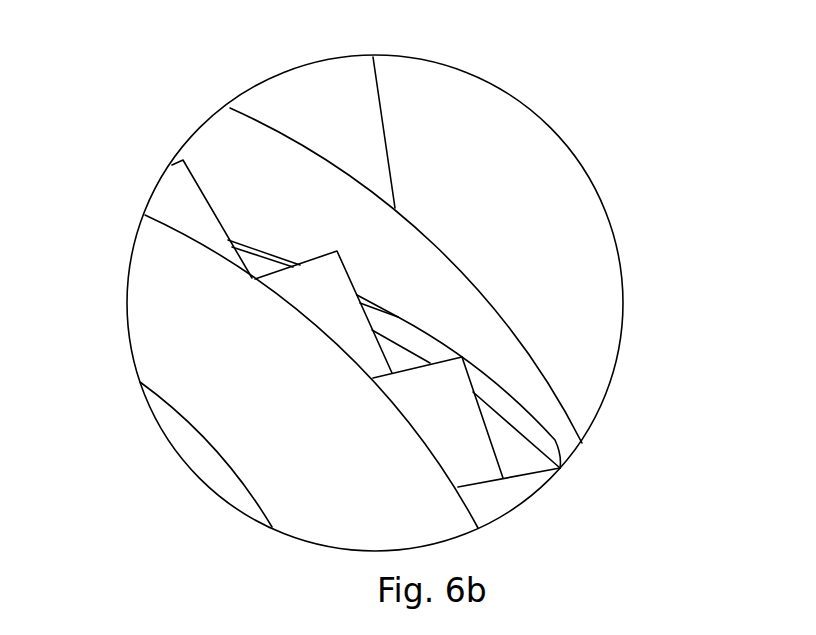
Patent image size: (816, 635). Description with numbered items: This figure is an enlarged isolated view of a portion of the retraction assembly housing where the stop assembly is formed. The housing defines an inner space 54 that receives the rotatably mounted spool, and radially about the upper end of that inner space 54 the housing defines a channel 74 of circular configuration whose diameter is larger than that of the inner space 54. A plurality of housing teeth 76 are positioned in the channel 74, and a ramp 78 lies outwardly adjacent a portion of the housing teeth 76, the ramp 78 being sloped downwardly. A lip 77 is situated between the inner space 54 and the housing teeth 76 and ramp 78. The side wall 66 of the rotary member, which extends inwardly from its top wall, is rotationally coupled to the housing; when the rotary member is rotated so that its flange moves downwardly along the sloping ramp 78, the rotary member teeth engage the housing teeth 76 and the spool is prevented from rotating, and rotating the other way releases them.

The inner space 54 is at (211, 505).
The side wall 66 is at (582, 195).
The channel 74 is at (530, 360).
The housing teeth 76 is at (478, 452).
The lip 77 is at (127, 297).
The ramp 78 is at (260, 267).